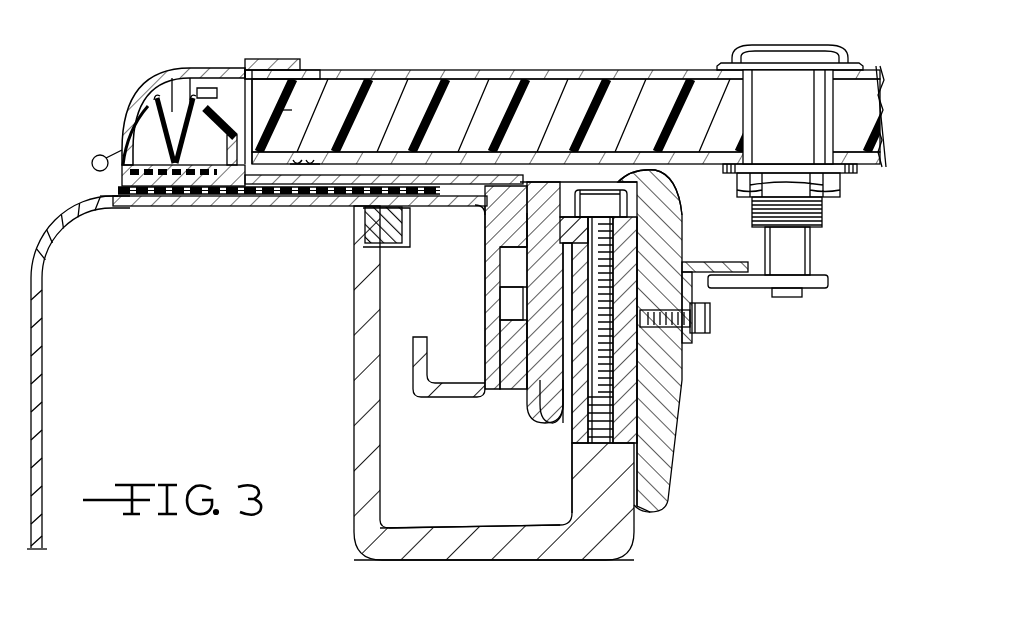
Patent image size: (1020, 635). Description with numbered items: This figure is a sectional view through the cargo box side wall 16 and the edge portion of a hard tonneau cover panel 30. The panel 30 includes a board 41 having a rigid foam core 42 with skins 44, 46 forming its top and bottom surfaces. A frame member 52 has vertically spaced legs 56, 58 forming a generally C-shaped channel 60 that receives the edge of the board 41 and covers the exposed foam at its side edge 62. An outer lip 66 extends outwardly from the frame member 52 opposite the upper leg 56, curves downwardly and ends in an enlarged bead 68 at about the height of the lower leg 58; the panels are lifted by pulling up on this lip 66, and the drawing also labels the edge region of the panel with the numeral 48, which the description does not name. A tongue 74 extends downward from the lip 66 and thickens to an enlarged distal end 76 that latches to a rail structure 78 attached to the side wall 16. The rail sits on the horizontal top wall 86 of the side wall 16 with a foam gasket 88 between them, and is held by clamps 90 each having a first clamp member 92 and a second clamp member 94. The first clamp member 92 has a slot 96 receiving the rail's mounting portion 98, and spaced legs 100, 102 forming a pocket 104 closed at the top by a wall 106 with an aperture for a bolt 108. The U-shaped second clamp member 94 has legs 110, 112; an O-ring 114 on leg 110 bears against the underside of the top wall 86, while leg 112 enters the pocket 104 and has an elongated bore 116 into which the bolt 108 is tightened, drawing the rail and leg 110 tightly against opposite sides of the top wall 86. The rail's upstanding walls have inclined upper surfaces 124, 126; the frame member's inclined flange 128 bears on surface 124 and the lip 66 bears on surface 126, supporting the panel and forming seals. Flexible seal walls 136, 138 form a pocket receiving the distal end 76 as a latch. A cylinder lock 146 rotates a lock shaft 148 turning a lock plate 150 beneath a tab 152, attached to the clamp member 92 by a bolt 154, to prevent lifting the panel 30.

The cargo box side wall 16 is at (44, 393).
The panel 30 is at (566, 116).
The board 41 is at (610, 60).
The rigid core 42 is at (627, 93).
The skin 44 is at (690, 65).
The skin 46 is at (866, 158).
The seal housing 48 is at (161, 132).
The frame member 52 is at (230, 50).
The upper leg 56 is at (290, 62).
The lower leg 58 is at (320, 188).
The C-shaped channel 60 is at (317, 78).
The side edge 62 is at (232, 60).
The outer lip 66 is at (133, 110).
The enlarged bead 68 is at (90, 165).
The tongue 74 is at (161, 67).
The enlarged distal end 76 is at (157, 207).
The rail structure 78 is at (110, 190).
The horizontal top wall 86 is at (173, 207).
The foam gasket 88 is at (270, 207).
The clamp 90 is at (612, 566).
The first clamp member 92 is at (695, 349).
The second clamp member 94 is at (468, 568).
The slot 96 is at (510, 258).
The mounting portion 98 is at (527, 303).
The leg 100 is at (550, 397).
The leg 102 is at (667, 423).
The pocket 104 is at (640, 252).
The wall 106 is at (553, 182).
The bolt 108 is at (660, 176).
The leg 110 is at (450, 393).
The leg 112 is at (583, 460).
The O-ring 114 is at (367, 237).
The elongated bore 116 is at (647, 508).
The inclined upper surface 124 is at (200, 108).
The inclined upper surface 126 is at (150, 107).
The inclined flange 128 is at (340, 88).
The wall 136 is at (228, 205).
The wall 138 is at (150, 147).
The cylinder lock 146 is at (797, 188).
The lock shaft 148 is at (813, 255).
The lock plate 150 is at (760, 295).
The tab 152 is at (732, 276).
The bolt 154 is at (697, 333).